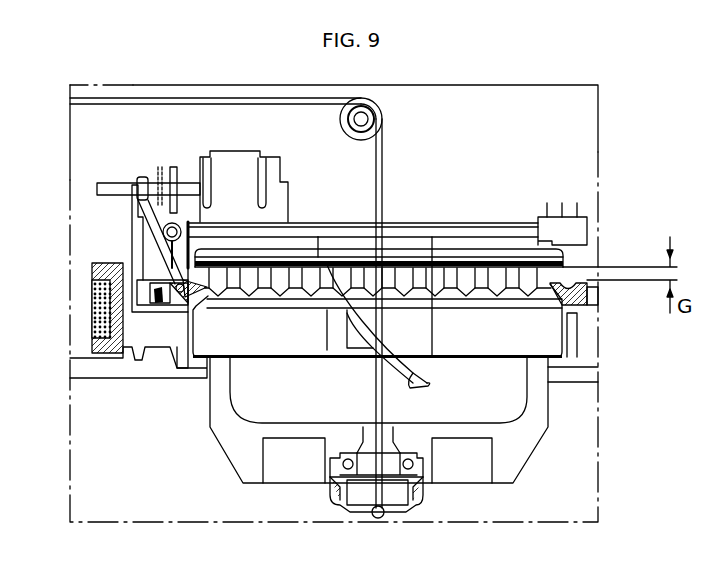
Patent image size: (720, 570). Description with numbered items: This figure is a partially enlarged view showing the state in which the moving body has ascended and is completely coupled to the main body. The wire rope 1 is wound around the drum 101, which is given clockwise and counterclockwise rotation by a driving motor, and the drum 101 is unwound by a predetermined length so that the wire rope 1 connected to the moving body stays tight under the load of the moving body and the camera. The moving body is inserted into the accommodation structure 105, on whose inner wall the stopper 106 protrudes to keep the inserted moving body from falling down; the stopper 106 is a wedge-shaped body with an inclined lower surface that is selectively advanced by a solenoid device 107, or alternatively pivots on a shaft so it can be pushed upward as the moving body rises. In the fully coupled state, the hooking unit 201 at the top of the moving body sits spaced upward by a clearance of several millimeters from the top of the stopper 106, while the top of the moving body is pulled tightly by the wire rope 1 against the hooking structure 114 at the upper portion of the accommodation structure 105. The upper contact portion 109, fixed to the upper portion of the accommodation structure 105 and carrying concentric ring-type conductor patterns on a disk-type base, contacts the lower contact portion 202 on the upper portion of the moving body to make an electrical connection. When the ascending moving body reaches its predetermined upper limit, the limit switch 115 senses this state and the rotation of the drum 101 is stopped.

The wire rope 1 is at (383, 154).
The drum 101 is at (100, 269).
The accommodation structure 105 is at (184, 340).
The stopper 106 is at (205, 286).
The solenoid device 107 is at (184, 164).
The upper contact portion 109 is at (297, 252).
The hooking structure 114 is at (418, 240).
The limit switch 115 is at (590, 231).
The hooking unit 201 is at (567, 258).
The lower contact portion 202 is at (468, 238).